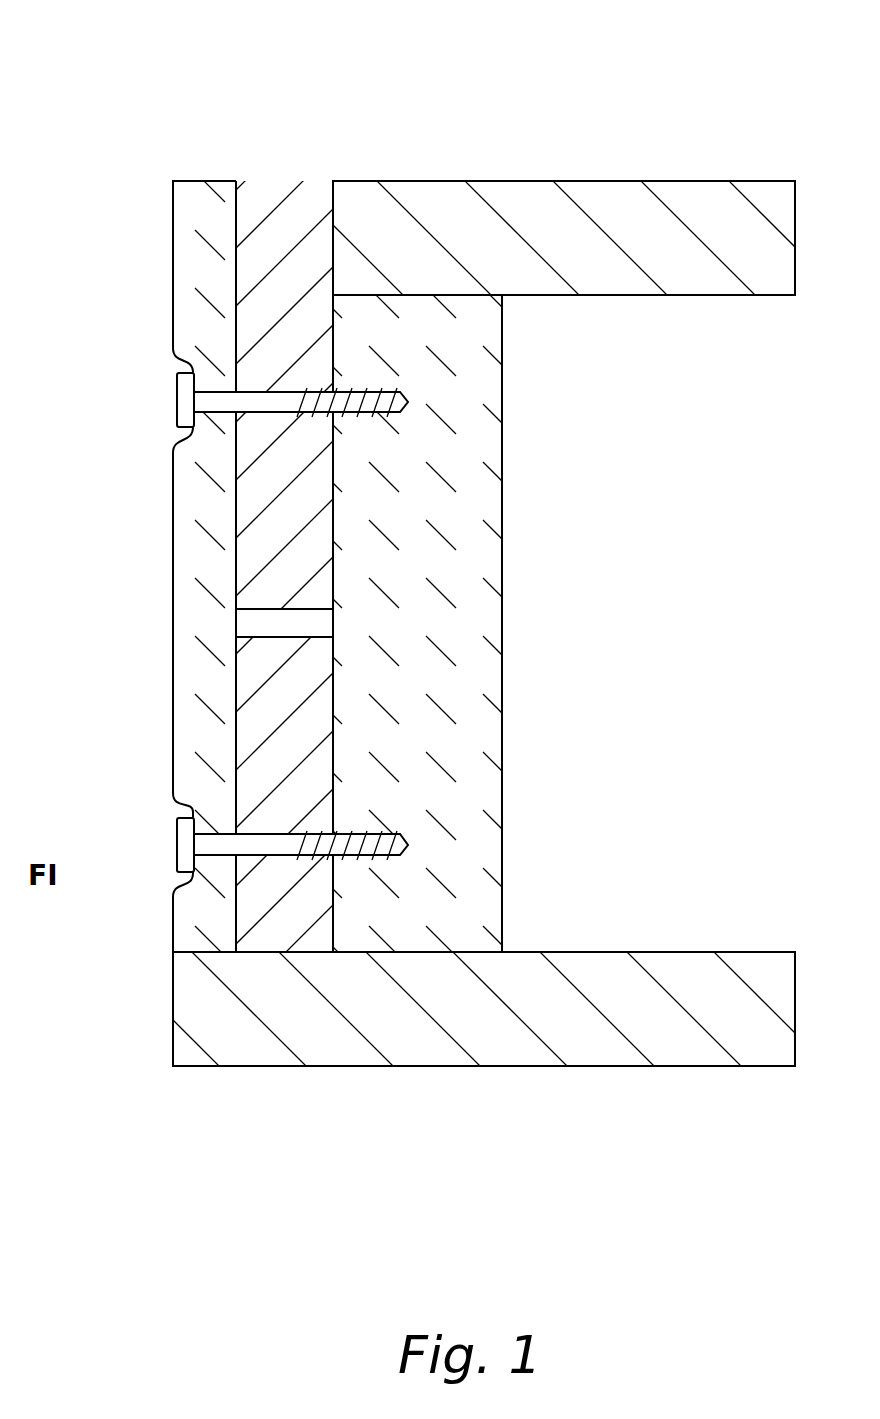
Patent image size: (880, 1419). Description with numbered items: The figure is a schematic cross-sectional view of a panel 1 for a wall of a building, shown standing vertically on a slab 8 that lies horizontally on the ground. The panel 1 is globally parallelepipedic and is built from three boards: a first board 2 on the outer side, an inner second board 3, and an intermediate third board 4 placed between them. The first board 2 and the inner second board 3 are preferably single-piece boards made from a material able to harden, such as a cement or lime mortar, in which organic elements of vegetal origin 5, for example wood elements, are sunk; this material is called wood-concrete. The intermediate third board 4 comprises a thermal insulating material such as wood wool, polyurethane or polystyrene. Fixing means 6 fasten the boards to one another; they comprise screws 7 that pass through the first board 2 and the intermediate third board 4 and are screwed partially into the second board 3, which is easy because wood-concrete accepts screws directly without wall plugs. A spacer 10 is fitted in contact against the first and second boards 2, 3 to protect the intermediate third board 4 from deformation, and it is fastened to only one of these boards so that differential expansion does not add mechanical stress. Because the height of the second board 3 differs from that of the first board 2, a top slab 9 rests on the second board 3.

The panel 1 is at (728, 96).
The first board 2 is at (203, 203).
The inner second board 3 is at (484, 384).
The intermediate third board 4 is at (290, 203).
The organic elements of vegetal origin 5 is at (210, 477).
The fixing means 6 is at (150, 404).
The screw 7 is at (267, 400).
The slab 8 is at (608, 1040).
The top slab 9 is at (608, 205).
The spacer 10 is at (263, 627).